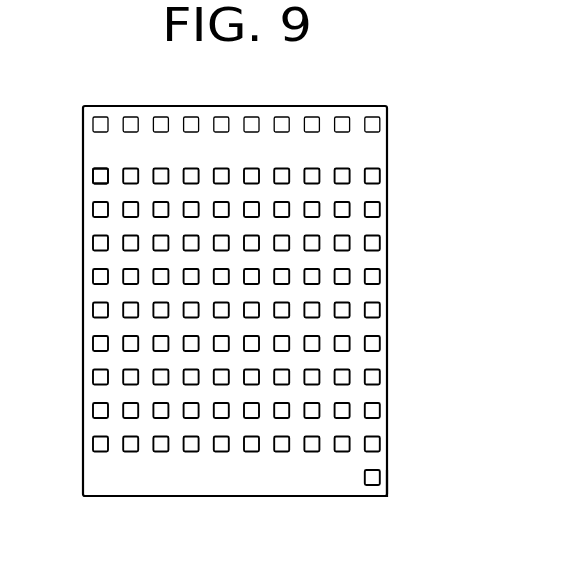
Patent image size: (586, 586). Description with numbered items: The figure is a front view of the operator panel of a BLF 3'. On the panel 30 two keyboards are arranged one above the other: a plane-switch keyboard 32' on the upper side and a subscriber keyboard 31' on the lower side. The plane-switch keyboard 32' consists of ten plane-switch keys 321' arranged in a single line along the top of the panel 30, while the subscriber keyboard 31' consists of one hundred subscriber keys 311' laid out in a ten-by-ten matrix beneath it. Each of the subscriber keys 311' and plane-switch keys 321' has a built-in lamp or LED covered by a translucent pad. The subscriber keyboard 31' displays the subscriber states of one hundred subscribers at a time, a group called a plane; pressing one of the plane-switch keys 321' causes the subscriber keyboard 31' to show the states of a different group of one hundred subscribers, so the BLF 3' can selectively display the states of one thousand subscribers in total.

The BLF 3' is at (235, 312).
The panel 30 is at (352, 486).
The subscriber keyboard 31' is at (279, 310).
The subscriber keys 311' is at (235, 329).
The plane-switch keyboard 32' is at (274, 301).
The plane-switch keys 321' is at (234, 98).